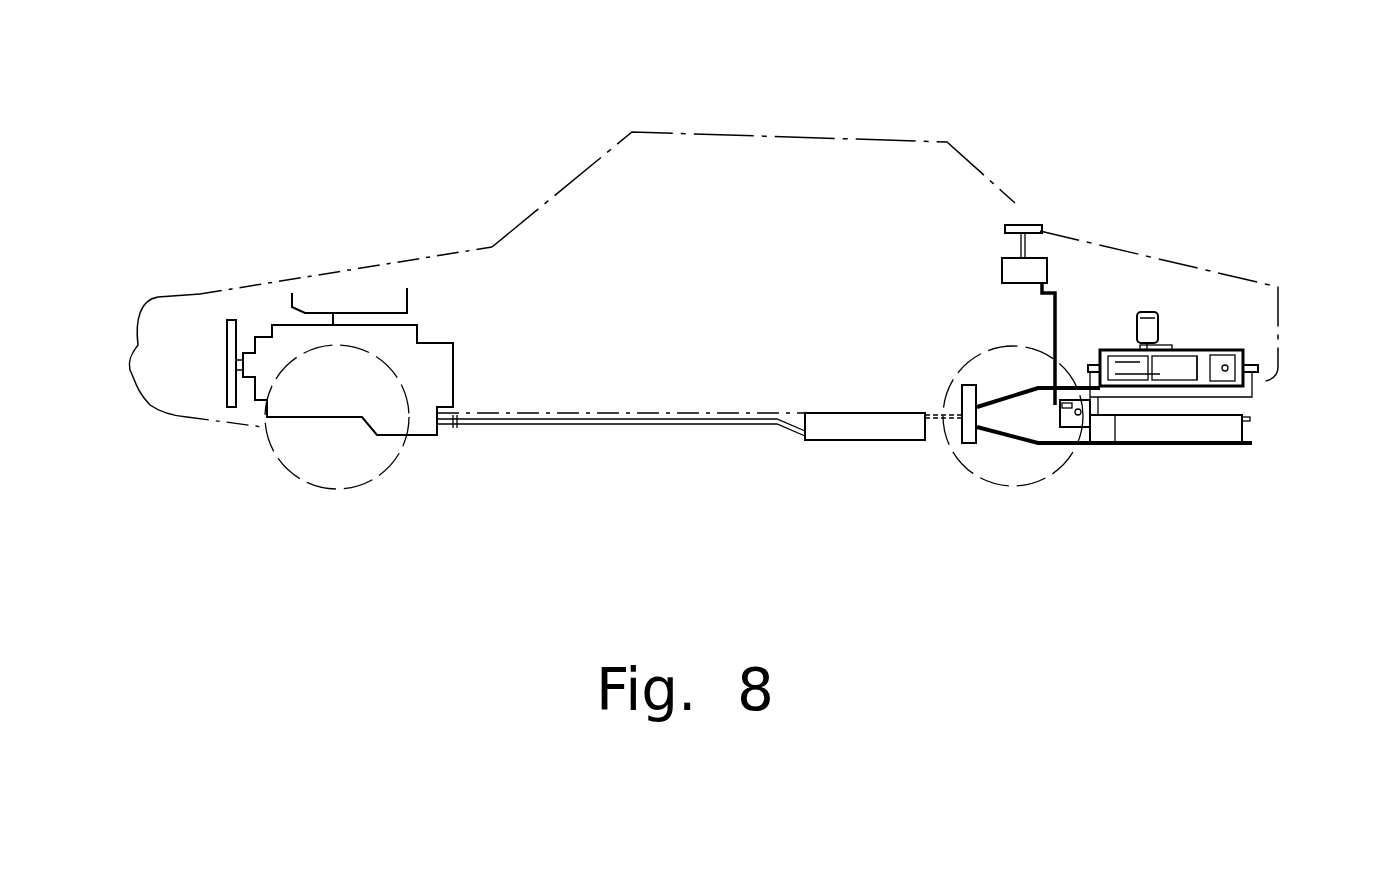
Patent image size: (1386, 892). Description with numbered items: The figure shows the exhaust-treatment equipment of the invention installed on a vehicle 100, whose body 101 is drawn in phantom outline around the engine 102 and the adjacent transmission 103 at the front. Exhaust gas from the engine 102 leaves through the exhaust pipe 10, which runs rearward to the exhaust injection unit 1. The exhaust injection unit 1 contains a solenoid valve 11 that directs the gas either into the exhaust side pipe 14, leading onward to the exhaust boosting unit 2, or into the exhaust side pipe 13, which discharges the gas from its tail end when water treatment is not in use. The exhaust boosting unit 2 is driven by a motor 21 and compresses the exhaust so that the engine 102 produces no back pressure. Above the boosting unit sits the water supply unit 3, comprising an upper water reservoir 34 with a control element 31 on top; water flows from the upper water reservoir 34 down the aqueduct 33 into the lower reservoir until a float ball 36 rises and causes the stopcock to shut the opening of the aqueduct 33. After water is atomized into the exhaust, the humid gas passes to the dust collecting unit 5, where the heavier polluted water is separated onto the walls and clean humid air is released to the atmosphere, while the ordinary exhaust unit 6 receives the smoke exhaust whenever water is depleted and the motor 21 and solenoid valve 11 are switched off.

The vehicle 100 is at (1223, 83).
The vehicle body 101 is at (760, 130).
The engine 102 is at (277, 472).
The gearbox 103 is at (827, 440).
The exhaust injection unit 1 is at (697, 430).
The exhaust boosting unit 2 is at (1220, 347).
The control unit 3 is at (1053, 263).
The dust collecting unit 5 is at (1250, 430).
The ordinary exhaust unit 6 is at (1185, 450).
The exhaust pipe 10 is at (937, 433).
The solenoid valve 11 is at (966, 445).
The exhaust side pipe 13 is at (1018, 443).
The exhaust side pipe 14 is at (1080, 380).
The motor 21 is at (1162, 322).
The control knob 31 is at (1022, 217).
The aqueduct 33 is at (1060, 318).
The upper water reservoir 34 is at (1000, 270).
The float ball 36 is at (1073, 448).